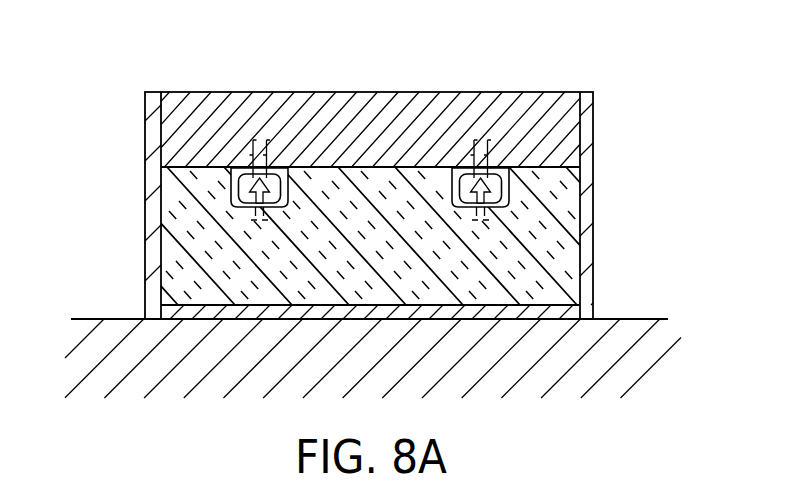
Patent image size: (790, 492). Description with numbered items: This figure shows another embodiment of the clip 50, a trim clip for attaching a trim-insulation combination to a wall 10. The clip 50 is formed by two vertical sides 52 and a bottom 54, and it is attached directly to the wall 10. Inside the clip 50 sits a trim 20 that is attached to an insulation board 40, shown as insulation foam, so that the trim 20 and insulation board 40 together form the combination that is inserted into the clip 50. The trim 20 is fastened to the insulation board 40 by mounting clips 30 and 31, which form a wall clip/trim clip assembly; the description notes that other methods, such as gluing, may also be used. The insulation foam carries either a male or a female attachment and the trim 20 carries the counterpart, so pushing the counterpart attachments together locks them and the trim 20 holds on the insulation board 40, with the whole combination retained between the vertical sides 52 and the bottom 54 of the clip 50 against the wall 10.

The wall 10 is at (637, 319).
The trim 20 is at (512, 92).
The mounting clip 30 is at (283, 167).
The mounting clip 31 is at (247, 177).
The insulation board 40 is at (547, 192).
The clip 50 is at (624, 64).
The vertical sides 52 is at (145, 138).
The bottom 54 is at (528, 312).